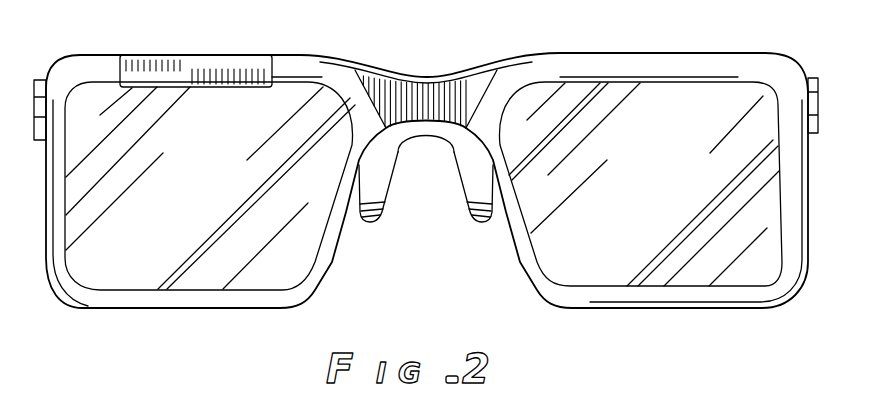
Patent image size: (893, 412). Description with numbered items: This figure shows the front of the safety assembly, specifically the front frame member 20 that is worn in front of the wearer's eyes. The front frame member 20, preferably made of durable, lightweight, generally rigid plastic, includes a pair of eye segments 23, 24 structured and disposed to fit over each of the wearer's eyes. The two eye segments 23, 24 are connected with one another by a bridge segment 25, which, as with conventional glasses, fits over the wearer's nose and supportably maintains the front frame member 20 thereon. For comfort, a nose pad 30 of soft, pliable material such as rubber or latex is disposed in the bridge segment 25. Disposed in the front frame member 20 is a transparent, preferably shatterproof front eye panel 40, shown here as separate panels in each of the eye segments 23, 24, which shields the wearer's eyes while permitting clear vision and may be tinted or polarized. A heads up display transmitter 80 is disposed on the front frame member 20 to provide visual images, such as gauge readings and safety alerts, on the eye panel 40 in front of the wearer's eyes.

The front frame member 20 is at (697, 45).
The eye segment 23 is at (186, 298).
The eye segment 24 is at (638, 302).
The bridge segment 25 is at (422, 95).
The nose pad 30 is at (452, 165).
The front eye panel 40 is at (220, 191).
The heads up display transmitter 80 is at (197, 60).